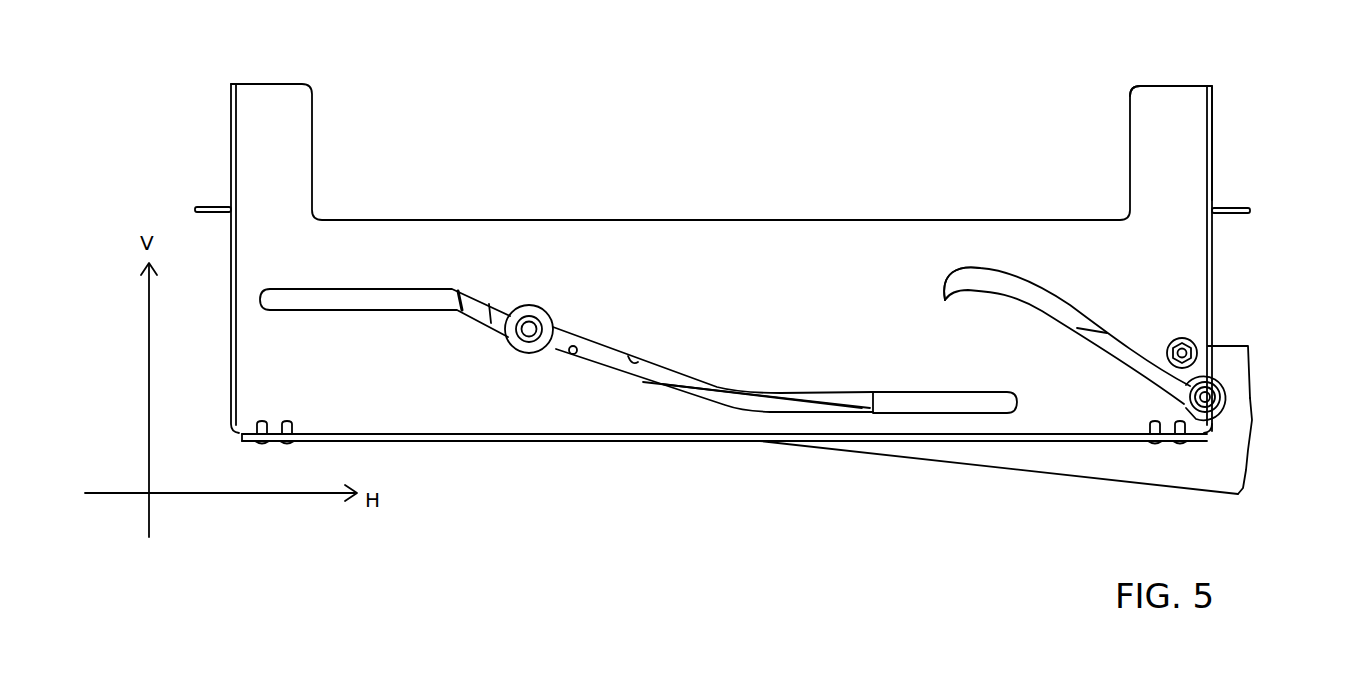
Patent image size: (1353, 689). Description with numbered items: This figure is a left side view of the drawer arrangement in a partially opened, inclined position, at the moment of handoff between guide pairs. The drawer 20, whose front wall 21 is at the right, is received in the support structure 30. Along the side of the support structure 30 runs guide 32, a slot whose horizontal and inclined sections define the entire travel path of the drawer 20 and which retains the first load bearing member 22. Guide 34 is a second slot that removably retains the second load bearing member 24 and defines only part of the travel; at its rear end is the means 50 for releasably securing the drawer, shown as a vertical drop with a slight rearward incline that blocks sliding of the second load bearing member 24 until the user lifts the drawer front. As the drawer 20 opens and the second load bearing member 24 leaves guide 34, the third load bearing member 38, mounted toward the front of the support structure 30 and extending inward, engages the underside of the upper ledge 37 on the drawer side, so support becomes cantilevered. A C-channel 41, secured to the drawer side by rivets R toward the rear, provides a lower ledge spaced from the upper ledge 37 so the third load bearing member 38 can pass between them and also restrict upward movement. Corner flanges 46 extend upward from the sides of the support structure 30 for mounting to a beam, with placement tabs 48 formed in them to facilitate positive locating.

The drawer 20 is at (1038, 486).
The front wall 21 is at (1247, 441).
The first load bearing member 22 is at (556, 312).
The second load bearing member 24 is at (1230, 372).
The support structure 30 is at (535, 201).
The guide (slot) 32 is at (470, 325).
The guide (slot) 34 is at (1053, 280).
The upper ledge 37 is at (1234, 344).
The third load bearing member 38 is at (1193, 348).
The C-channel 41 is at (650, 376).
The corner flange 46 is at (1182, 101).
The placement tab 48 is at (1234, 206).
The means for releasably securing 50 is at (944, 300).
The rivets R is at (580, 343).